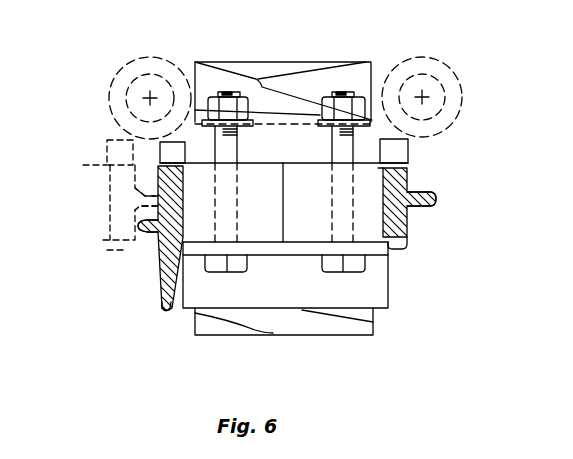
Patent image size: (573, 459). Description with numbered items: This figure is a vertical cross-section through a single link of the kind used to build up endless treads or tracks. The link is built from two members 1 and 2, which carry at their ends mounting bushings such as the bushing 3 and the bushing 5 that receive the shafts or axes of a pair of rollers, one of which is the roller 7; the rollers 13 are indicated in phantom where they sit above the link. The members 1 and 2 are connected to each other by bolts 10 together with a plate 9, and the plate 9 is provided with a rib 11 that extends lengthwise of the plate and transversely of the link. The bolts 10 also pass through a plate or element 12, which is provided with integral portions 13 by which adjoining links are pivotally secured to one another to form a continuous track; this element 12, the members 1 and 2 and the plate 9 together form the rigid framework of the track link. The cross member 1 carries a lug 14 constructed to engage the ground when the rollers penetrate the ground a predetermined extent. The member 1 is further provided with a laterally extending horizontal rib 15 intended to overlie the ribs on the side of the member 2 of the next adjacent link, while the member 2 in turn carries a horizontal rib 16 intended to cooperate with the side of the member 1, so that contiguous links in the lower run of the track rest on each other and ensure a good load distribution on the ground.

The cross member 1 is at (157, 238).
The member 2 is at (107, 143).
The mounting bushing 3 is at (392, 151).
The mounting bushing 5 is at (157, 138).
The roller 7 is at (250, 317).
The plate 9 is at (302, 245).
The bolts 10 is at (217, 262).
The rib 11 is at (372, 288).
The plate or element 12 is at (280, 140).
The integral portions 13 is at (147, 80).
The lug 14 is at (167, 300).
The horizontal rib 15 is at (140, 225).
The horizontal rib 16 is at (158, 203).